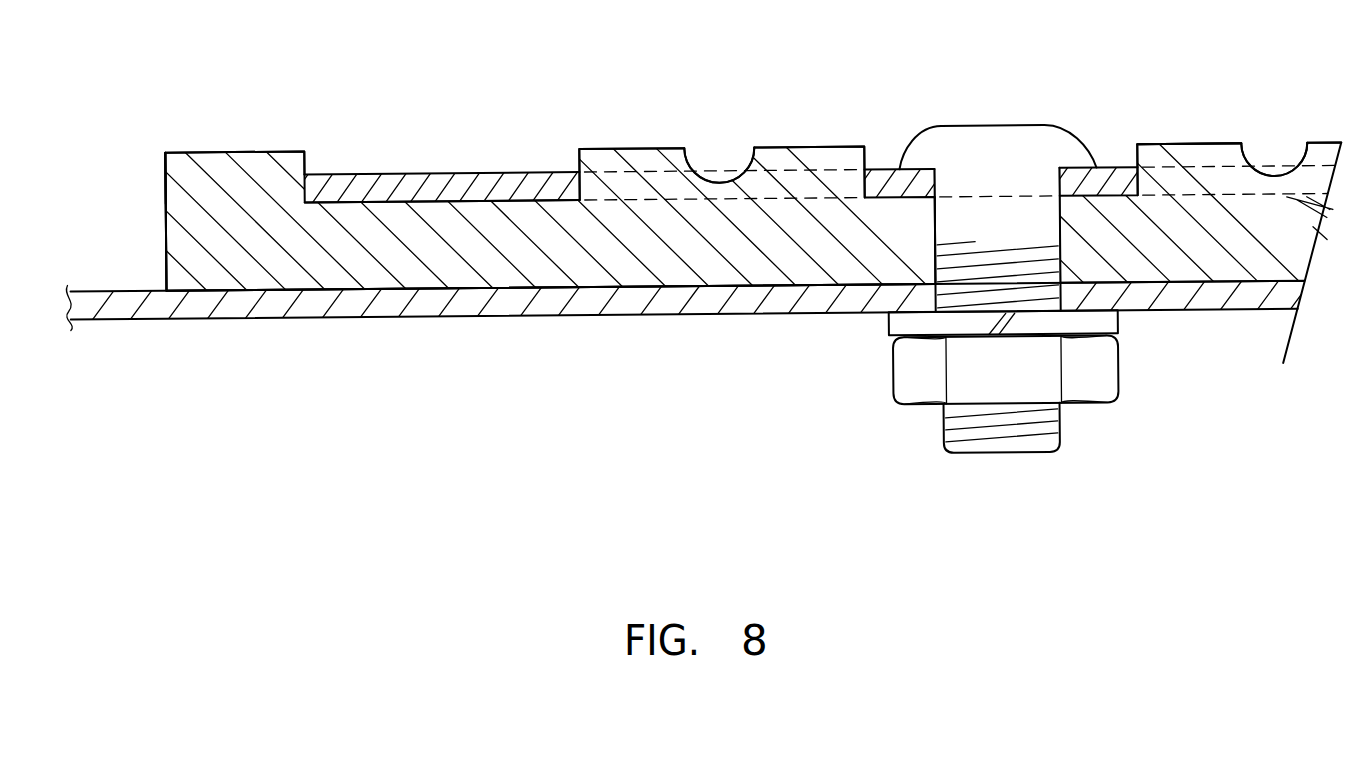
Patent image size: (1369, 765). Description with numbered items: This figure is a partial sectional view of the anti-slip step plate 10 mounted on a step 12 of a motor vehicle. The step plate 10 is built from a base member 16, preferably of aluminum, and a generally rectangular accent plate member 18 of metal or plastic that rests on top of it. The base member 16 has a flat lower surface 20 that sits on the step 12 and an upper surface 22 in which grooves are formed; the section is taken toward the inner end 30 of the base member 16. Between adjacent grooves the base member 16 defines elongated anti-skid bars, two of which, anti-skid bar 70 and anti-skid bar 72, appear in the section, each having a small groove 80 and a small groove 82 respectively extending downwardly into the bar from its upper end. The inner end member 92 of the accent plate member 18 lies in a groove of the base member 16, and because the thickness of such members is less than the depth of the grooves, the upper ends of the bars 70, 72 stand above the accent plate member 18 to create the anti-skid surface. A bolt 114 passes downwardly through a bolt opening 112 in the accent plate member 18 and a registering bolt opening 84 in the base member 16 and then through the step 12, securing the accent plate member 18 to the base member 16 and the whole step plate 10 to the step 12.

The anti-slip step plate 10 is at (1270, 115).
The step 12 is at (776, 303).
The base member 16 is at (142, 236).
The accent plate member 18 is at (493, 152).
The flat lower surface 20 is at (557, 282).
The upper surface 22 is at (278, 148).
The inner end 30 is at (162, 185).
The anti-skid bar 70 is at (1193, 143).
The anti-skid bar 72 is at (631, 148).
The small groove 80 is at (1282, 152).
The small groove 82 is at (725, 155).
The bolt opening 84 is at (1063, 252).
The inner end member 92 is at (396, 183).
The bolt opening 112 is at (1092, 192).
The bolt 114 is at (1008, 143).